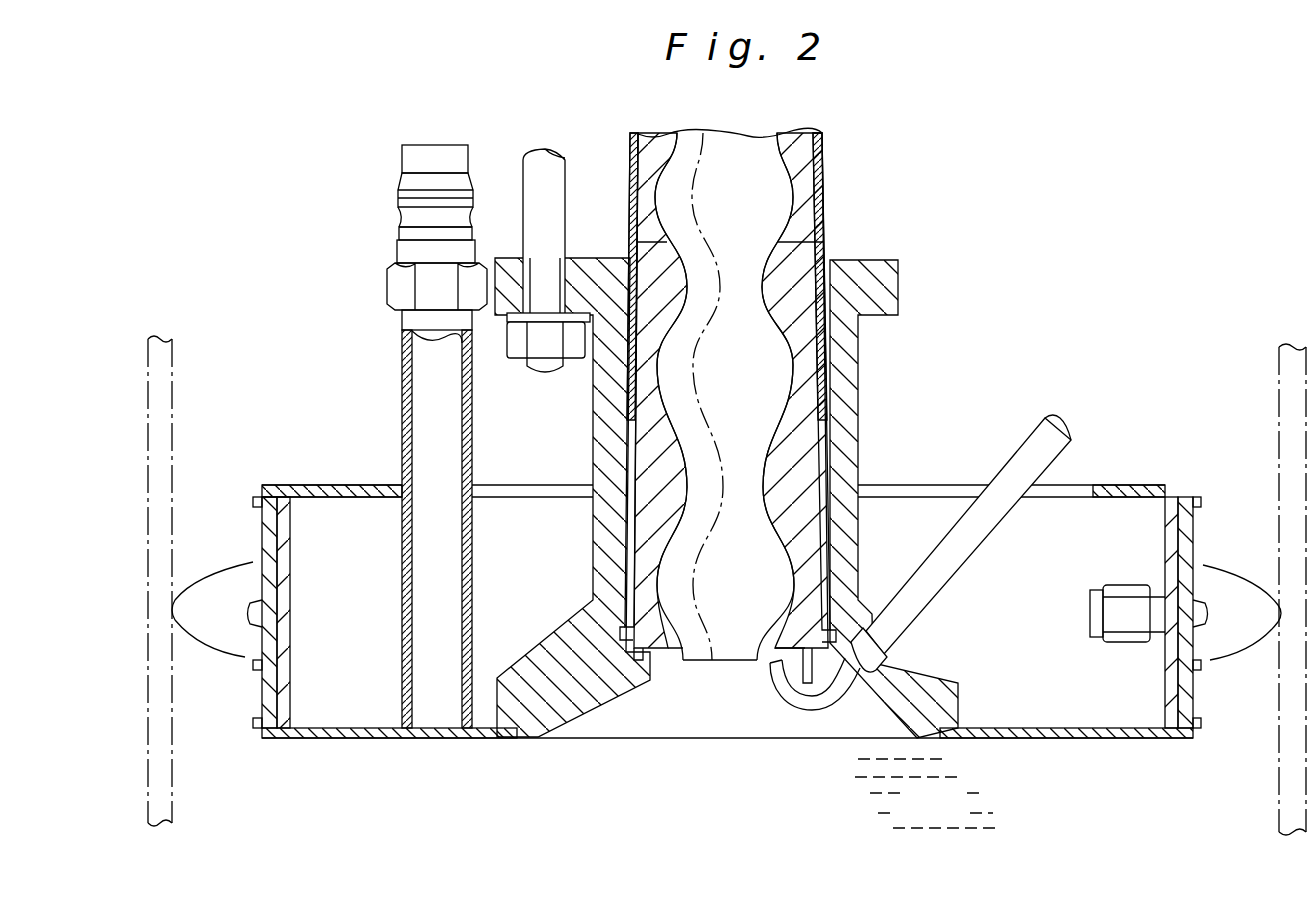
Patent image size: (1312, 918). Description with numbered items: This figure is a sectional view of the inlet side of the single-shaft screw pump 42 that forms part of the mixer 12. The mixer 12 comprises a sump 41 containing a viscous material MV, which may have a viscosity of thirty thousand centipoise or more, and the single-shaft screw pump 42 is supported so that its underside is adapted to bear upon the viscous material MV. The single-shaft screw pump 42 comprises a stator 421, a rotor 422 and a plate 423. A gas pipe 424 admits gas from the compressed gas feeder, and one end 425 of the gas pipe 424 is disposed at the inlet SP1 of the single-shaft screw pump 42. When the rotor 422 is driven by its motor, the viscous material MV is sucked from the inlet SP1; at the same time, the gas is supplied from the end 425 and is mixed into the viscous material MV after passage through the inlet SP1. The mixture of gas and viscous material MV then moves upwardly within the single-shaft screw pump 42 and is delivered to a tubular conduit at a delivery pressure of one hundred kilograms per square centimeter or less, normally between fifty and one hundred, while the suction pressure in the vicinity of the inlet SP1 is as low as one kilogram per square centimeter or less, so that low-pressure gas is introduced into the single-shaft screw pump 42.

The mixer 12 is at (1001, 159).
The sump 41 is at (1283, 383).
The single-shaft screw pump 42 is at (822, 170).
The stator 421 is at (803, 458).
The rotor 422 is at (730, 262).
The plate 423 is at (1083, 740).
The gas pipe 424 is at (1010, 514).
The end of gas pipe 425 is at (795, 710).
The inlet SP1 is at (730, 667).
The viscous material MV is at (962, 812).